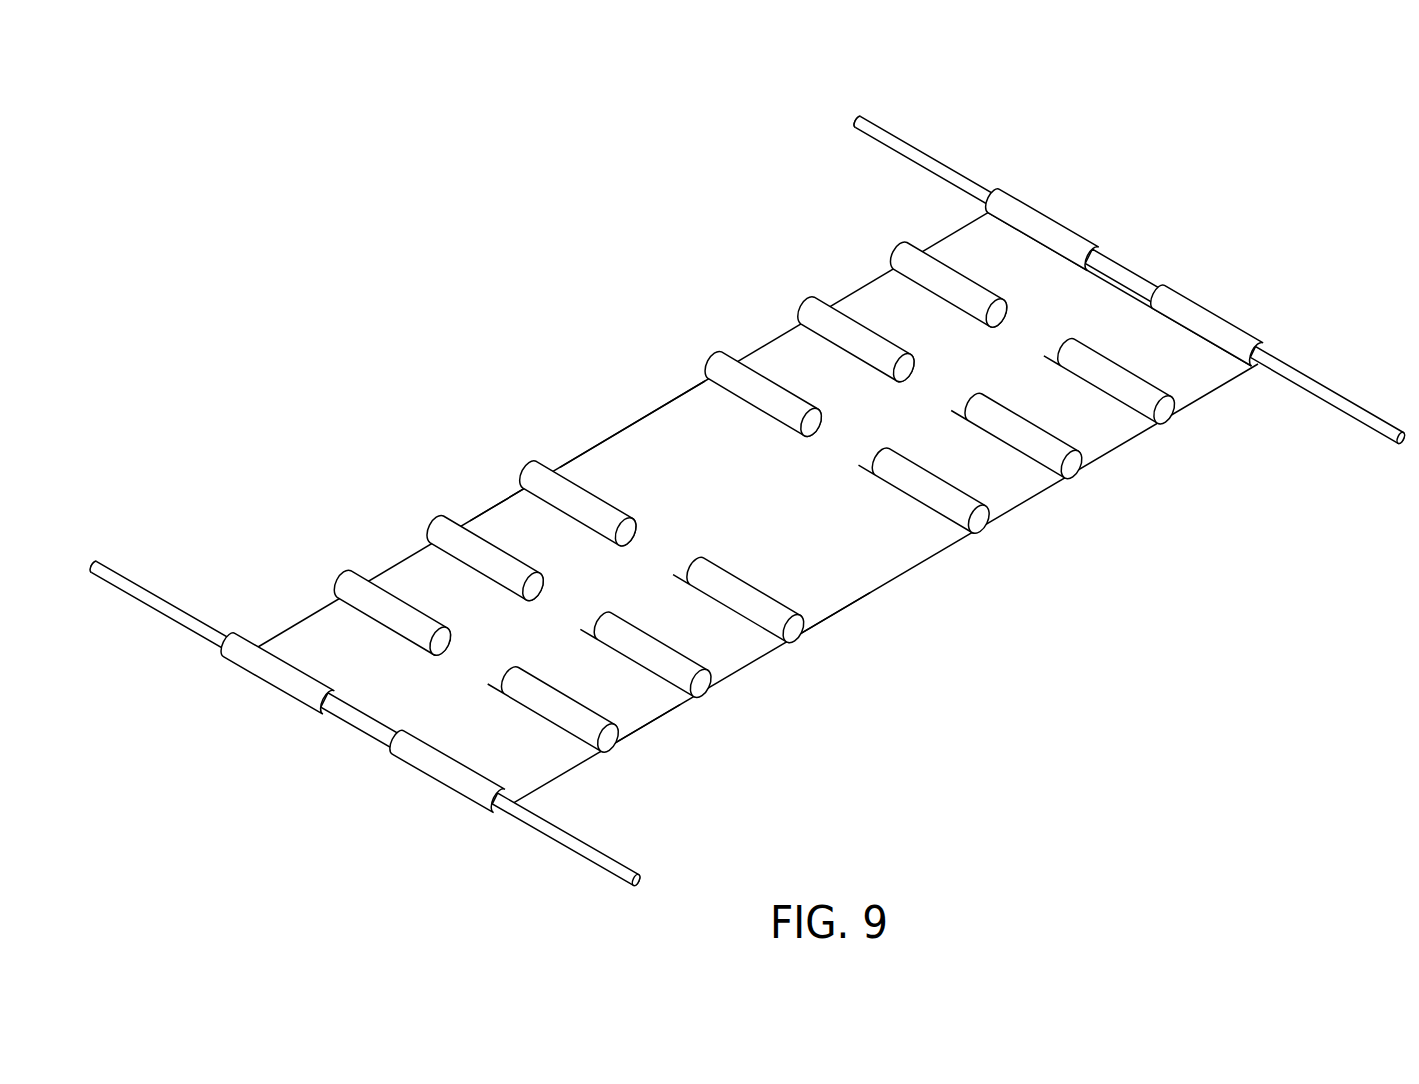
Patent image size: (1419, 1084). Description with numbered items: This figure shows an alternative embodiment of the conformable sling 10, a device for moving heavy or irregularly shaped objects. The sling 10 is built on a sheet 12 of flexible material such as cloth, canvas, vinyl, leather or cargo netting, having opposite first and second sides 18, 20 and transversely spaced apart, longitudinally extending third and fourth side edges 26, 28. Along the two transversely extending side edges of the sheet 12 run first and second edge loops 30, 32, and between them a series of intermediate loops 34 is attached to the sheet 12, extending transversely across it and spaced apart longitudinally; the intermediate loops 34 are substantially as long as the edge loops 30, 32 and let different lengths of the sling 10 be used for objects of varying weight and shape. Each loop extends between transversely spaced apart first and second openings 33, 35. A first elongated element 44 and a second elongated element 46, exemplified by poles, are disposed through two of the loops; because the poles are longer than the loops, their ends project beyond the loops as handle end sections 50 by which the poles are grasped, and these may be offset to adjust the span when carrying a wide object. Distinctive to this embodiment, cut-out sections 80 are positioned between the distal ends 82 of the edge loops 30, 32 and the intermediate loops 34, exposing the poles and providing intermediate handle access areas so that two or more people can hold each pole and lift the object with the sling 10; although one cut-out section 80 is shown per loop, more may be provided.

The conformable sling 10 is at (908, 658).
The sheet 12 is at (902, 578).
The first side 18 is at (645, 437).
The second side 20 is at (828, 617).
The third side edge 26 is at (510, 500).
The fourth side edge 28 is at (653, 723).
The first edge loop 30 is at (290, 674).
The second edge loop 32 is at (1207, 316).
The first opening 33 is at (500, 793).
The intermediate loops 34 is at (412, 609).
The second opening 35 is at (340, 576).
The first elongated element 44 is at (93, 558).
The second elongated element 46 is at (858, 113).
The handle end sections 50 is at (162, 593).
The cut-out sections 80 is at (325, 700).
The distal ends 82 is at (740, 470).